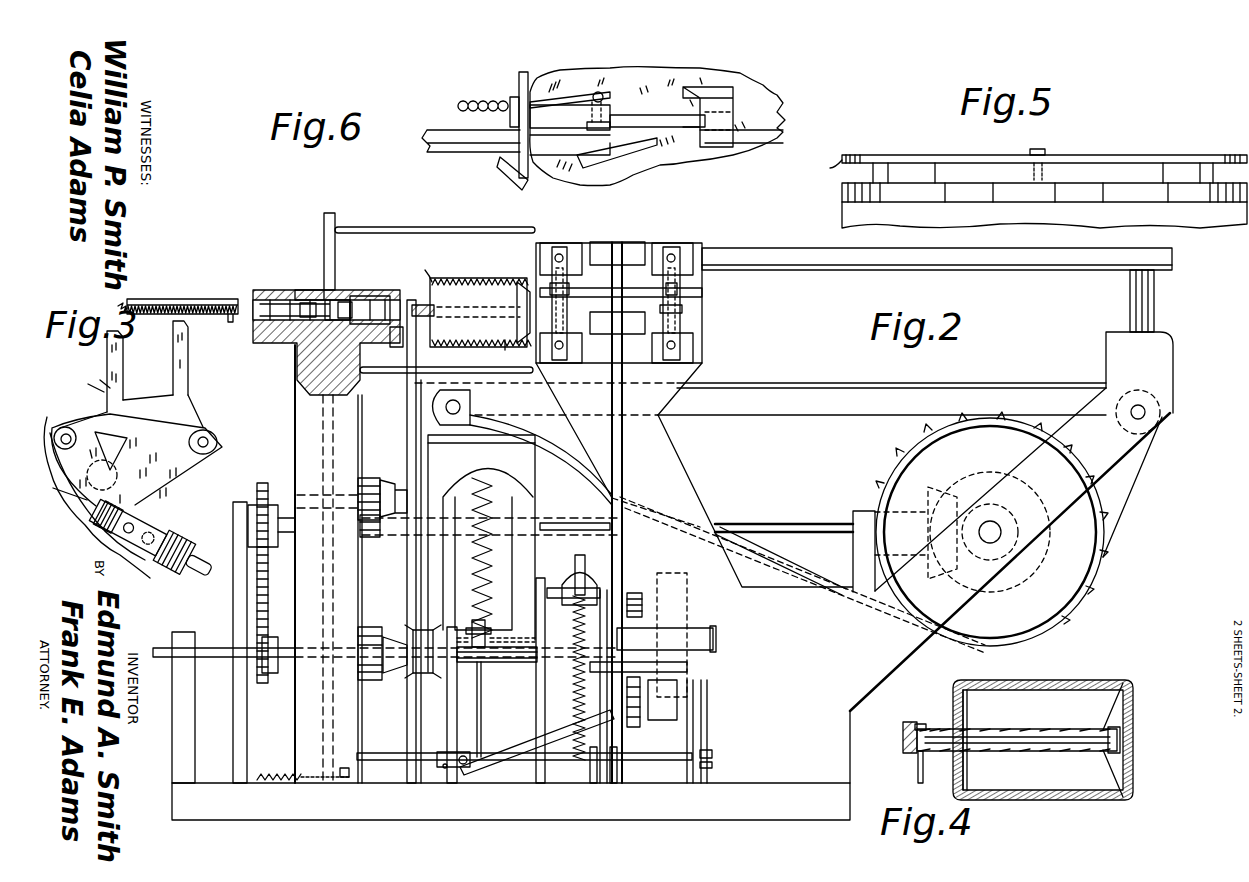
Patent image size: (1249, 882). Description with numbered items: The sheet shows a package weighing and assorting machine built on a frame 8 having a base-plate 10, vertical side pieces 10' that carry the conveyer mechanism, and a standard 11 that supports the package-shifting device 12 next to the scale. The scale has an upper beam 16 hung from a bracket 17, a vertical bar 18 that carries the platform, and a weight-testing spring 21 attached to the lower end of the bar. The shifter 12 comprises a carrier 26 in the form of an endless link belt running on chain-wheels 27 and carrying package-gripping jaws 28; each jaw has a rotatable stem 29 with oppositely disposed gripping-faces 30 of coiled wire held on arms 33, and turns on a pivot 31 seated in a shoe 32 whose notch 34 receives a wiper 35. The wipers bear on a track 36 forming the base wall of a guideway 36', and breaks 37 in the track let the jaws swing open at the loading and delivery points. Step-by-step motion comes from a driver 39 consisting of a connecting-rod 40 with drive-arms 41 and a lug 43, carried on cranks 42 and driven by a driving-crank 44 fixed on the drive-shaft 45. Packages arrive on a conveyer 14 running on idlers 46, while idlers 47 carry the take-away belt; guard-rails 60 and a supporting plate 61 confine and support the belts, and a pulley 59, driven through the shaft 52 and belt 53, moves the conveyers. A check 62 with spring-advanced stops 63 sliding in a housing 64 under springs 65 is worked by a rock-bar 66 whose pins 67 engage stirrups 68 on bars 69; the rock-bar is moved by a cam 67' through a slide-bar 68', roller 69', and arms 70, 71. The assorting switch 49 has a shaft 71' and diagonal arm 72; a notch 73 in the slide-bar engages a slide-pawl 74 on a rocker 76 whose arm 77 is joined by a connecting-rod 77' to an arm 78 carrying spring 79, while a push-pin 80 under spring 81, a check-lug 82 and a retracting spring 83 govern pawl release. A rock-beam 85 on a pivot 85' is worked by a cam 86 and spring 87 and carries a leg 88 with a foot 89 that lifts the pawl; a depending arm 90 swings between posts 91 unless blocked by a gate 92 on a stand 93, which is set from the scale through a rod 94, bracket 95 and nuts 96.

In FIG. 4, the frame 8 is at (866, 770).
In FIG. 2, the base-plate 10 is at (671, 604).
In FIG. 2, the vertical side pieces 10' is at (641, 430).
In FIG. 3, the standard 11 is at (200, 390).
In FIG. 2, the standard 11 is at (295, 450).
In FIG. 3, the package-shifting device 12 is at (262, 290).
In FIG. 2, the conveyer 14 is at (765, 386).
In FIG. 2, the upper beam 16 is at (540, 495).
In FIG. 2, the bracket 17 is at (530, 452).
In FIG. 2, the vertical bar 18 is at (462, 480).
In FIG. 2, the weight-testing spring 21 is at (484, 576).
In FIG. 2, the carrier 26 is at (380, 292).
In FIG. 2, the chain-wheels 27 is at (350, 298).
In FIG. 4, the package-gripping jaws 28 is at (1000, 757).
In FIG. 3, the package-gripping jaws 28 is at (195, 299).
In FIG. 2, the package-gripping jaws 28 is at (475, 278).
In FIG. 4, the rotatable stem 29 is at (1046, 732).
In FIG. 2, the rotatable stem 29 is at (483, 318).
In FIG. 4, the gripping-faces 30 is at (1052, 681).
In FIG. 2, the gripping-faces 30 is at (465, 310).
In FIG. 4, the pivot 31 is at (1018, 734).
In FIG. 4, the shoe 32 is at (905, 728).
In FIG. 4, the arms 33 is at (968, 710).
In FIG. 4, the notch 34 is at (922, 725).
In FIG. 4, the wiper 35 is at (917, 768).
In FIG. 2, the wiper 35 is at (430, 316).
In FIG. 5, the track 36 is at (1004, 176).
In FIG. 3, the track 36 is at (233, 329).
In FIG. 5, the guideway 36' is at (1044, 154).
In FIG. 5, the breaks in the track 37 is at (912, 204).
In FIG. 2, the breaks in the track 37 is at (393, 345).
In FIG. 3, the driver 39 is at (106, 395).
In FIG. 2, the driver 39 is at (398, 480).
In FIG. 3, the connecting-rod 40 is at (208, 402).
In FIG. 3, the drive-arms 41 is at (124, 372).
In FIG. 2, the drive-arms 41 is at (407, 381).
In FIG. 3, the cranks 42 is at (58, 428).
In FIG. 3, the lug 43 is at (130, 474).
In FIG. 3, the driving-crank 44 is at (160, 520).
In FIG. 2, the driving-crank 44 is at (388, 636).
In FIG. 3, the drive-shaft 45 is at (188, 575).
In FIG. 2, the drive-shaft 45 is at (228, 660).
In FIG. 2, the idlers 46 is at (1155, 428).
In FIG. 2, the idlers 47 is at (370, 534).
In FIG. 2, the switch 49 is at (338, 222).
In FIG. 2, the shaft 52 is at (765, 523).
In FIG. 2, the belt 53 is at (257, 610).
In FIG. 2, the pulley 59 is at (1104, 582).
In FIG. 2, the guard-rails 60 is at (778, 256).
In FIG. 2, the plate 61 is at (818, 414).
In FIG. 2, the check 62 is at (693, 318).
In FIG. 2, the stops 63 is at (688, 325).
In FIG. 2, the housing 64 is at (648, 246).
In FIG. 2, the springs 65 is at (570, 290).
In FIG. 2, the rock-bar 66 is at (624, 452).
In FIG. 2, the pins 67 is at (699, 290).
In FIG. 2, the cam 67' is at (641, 711).
In FIG. 6, the stirrups 68 is at (750, 117).
In FIG. 2, the stirrups 68 is at (654, 294).
In FIG. 2, the slide-bar 68' is at (712, 695).
In FIG. 2, the bars 69 is at (638, 288).
In FIG. 2, the roller 69' is at (678, 635).
In FIG. 2, the arm 70 is at (716, 630).
In FIG. 2, the arm 71 is at (672, 649).
In FIG. 2, the shaft 71' is at (307, 278).
In FIG. 2, the arm 72 is at (428, 227).
In FIG. 6, the notch 73 is at (625, 112).
In FIG. 6, the slide-pawl 74 is at (458, 132).
In FIG. 2, the rocker 76 is at (708, 716).
In FIG. 2, the second arm 77 is at (729, 748).
In FIG. 2, the connecting-rod 77' is at (524, 744).
In FIG. 2, the arm 78 is at (341, 765).
In FIG. 2, the spring 79 is at (268, 772).
In FIG. 6, the push-pin 80 is at (602, 93).
In FIG. 6, the spring 81 is at (555, 98).
In FIG. 6, the check-lug 82 is at (645, 150).
In FIG. 6, the spring 83 is at (467, 96).
In FIG. 2, the rock-beam 85 is at (568, 660).
In FIG. 2, the pivot 85' is at (656, 539).
In FIG. 2, the cam 86 is at (575, 690).
In FIG. 2, the spring 87 is at (572, 585).
In FIG. 6, the leg 88 is at (521, 75).
In FIG. 6, the foot 89 is at (503, 163).
In FIG. 2, the depending arm 90 is at (604, 585).
In FIG. 2, the posts 91 is at (618, 776).
In FIG. 2, the gate 92 is at (510, 748).
In FIG. 2, the stand 93 is at (470, 772).
In FIG. 2, the rod 94 is at (484, 716).
In FIG. 2, the bracket 95 is at (487, 622).
In FIG. 2, the nuts 96 is at (486, 662).